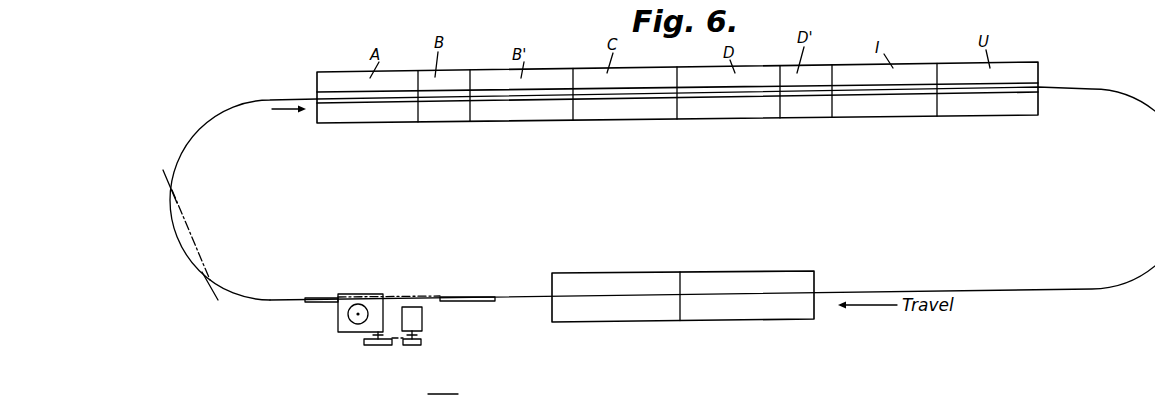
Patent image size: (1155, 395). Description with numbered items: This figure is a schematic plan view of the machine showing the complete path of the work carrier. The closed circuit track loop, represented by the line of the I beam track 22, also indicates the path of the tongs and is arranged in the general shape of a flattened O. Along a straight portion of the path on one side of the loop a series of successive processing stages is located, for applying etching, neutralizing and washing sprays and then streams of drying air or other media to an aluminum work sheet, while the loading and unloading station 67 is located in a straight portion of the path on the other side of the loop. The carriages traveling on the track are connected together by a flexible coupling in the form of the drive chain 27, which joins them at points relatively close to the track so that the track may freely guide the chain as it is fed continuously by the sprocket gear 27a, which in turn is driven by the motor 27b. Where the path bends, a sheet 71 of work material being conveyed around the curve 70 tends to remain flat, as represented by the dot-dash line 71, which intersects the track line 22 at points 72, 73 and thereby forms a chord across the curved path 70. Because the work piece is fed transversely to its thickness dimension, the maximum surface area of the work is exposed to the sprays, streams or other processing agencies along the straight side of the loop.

The I beam track 22 is at (1012, 289).
The drive chain 27 is at (316, 297).
The sprocket gear 27a is at (347, 317).
The motor 27b is at (417, 324).
The loading and unloading station 67 is at (684, 326).
The curve 70 is at (175, 227).
The sheet of work material 71 is at (198, 252).
The intersection point 72 is at (170, 191).
The intersection point 73 is at (208, 283).